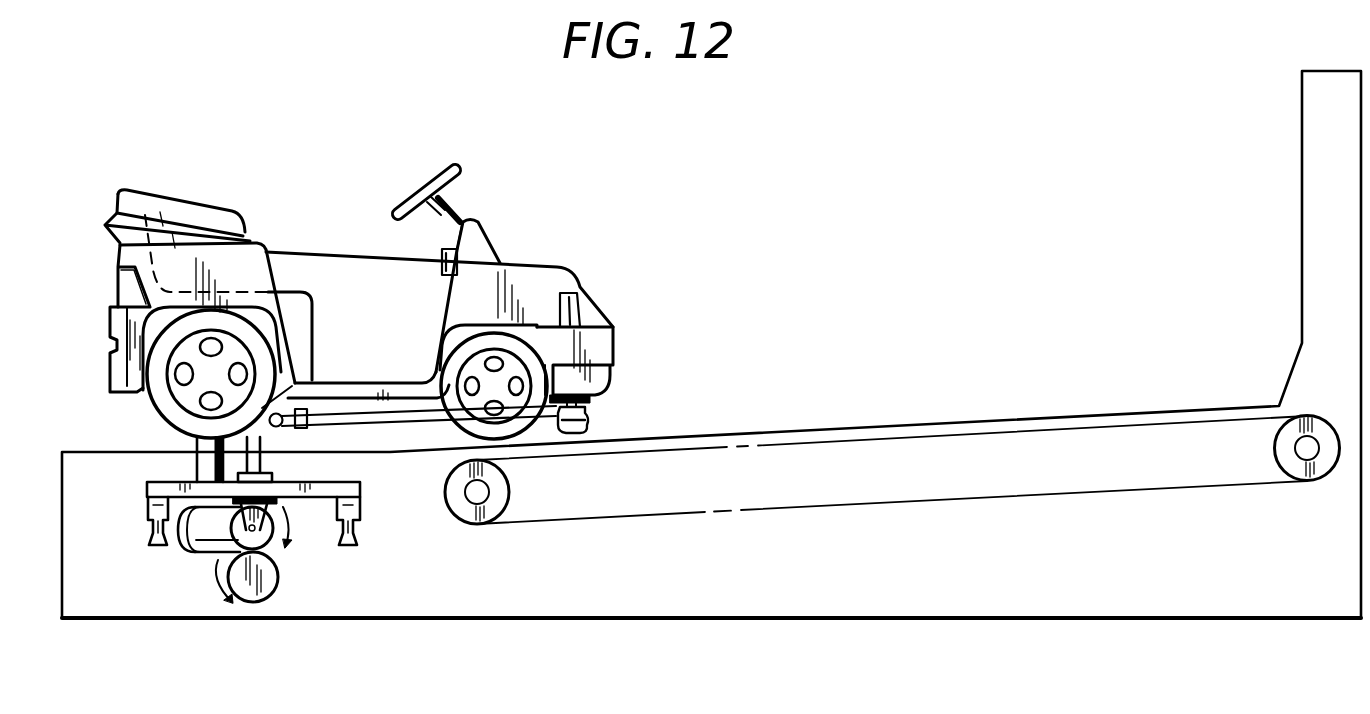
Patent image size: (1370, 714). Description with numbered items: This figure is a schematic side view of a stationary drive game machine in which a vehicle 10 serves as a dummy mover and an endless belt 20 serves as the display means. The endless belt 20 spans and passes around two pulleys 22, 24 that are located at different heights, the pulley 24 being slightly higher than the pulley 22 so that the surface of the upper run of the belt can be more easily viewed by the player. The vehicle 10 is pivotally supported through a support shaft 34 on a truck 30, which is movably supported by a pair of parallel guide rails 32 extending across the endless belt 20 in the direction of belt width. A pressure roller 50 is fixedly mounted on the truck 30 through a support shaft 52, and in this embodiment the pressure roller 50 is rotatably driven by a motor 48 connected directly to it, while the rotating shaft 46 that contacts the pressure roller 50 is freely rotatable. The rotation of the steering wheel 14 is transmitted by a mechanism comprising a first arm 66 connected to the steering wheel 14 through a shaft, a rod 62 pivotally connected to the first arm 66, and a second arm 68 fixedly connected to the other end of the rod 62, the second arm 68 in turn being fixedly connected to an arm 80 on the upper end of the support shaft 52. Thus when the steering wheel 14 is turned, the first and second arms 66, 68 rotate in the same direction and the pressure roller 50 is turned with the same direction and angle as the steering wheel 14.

The vehicle 10 is at (396, 304).
The steering wheel 14 is at (460, 168).
The endless belt 20 is at (892, 494).
The pulley 22 is at (495, 518).
The pulley 24 is at (1309, 470).
The truck 30 is at (259, 521).
The guide rails 32 is at (150, 536).
The support shaft 34 is at (210, 463).
The rotating shaft 46 is at (260, 592).
The motor 48 is at (203, 537).
The pressure roller 50 is at (268, 543).
The support shaft 52 is at (262, 462).
The rod 62 is at (588, 422).
The first arm 66 is at (577, 400).
The second arm 68 is at (297, 428).
The arm 80 is at (292, 385).